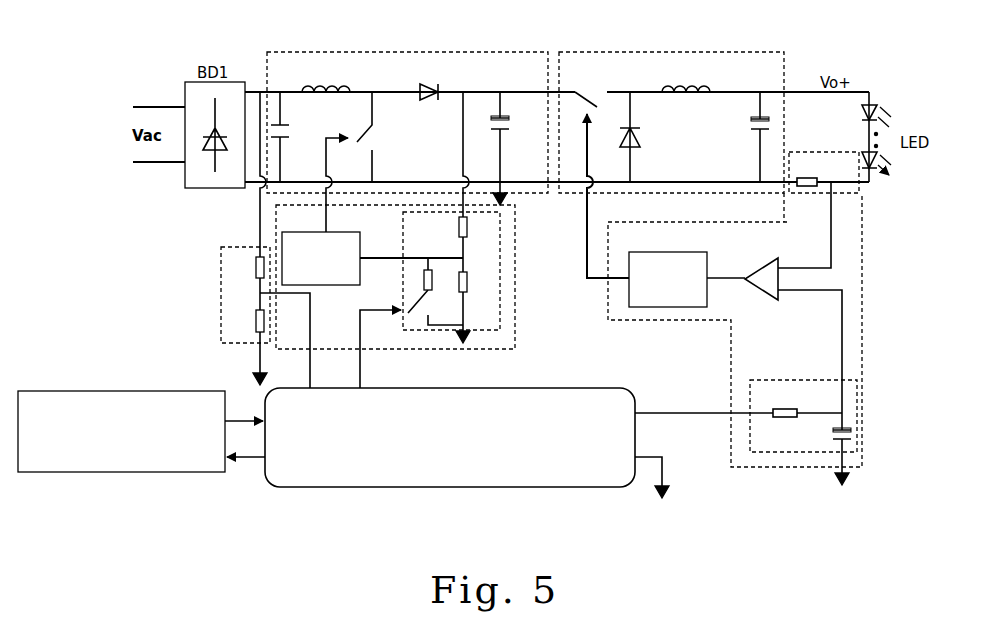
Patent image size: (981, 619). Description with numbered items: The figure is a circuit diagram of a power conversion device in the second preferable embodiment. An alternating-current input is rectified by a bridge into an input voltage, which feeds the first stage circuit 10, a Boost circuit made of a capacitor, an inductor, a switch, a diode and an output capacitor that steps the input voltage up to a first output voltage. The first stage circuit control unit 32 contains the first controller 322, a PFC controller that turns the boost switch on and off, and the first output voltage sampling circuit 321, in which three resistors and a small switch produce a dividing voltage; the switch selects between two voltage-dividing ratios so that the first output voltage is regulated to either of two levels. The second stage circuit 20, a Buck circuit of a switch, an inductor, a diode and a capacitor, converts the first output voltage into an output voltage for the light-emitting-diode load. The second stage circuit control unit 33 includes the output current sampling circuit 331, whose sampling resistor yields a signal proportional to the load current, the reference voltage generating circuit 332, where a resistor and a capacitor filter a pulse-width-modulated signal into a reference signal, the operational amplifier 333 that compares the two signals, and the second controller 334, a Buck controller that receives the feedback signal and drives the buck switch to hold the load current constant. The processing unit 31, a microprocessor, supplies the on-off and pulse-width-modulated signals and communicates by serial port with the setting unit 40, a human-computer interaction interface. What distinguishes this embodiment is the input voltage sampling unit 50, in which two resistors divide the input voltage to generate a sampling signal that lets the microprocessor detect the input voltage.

The first stage circuit 10 is at (393, 52).
The second stage circuit 20 is at (643, 52).
The processing unit 31 is at (530, 388).
The first stage circuit control unit 32 is at (426, 263).
The first output voltage sampling circuit 321 is at (500, 266).
The first controller 322 is at (348, 232).
The second stage circuit control unit 33 is at (748, 299).
The output current sampling circuit 331 is at (835, 195).
The reference voltage generating circuit 332 is at (802, 380).
The operational amplifier 333 is at (770, 300).
The second controller 334 is at (667, 252).
The setting unit 40 is at (167, 391).
The input voltage sampling unit 50 is at (221, 247).